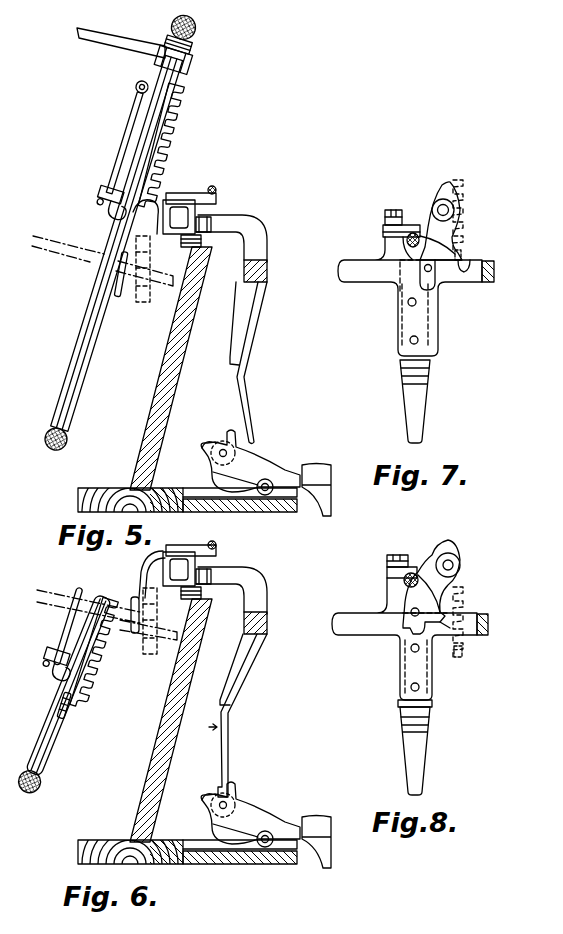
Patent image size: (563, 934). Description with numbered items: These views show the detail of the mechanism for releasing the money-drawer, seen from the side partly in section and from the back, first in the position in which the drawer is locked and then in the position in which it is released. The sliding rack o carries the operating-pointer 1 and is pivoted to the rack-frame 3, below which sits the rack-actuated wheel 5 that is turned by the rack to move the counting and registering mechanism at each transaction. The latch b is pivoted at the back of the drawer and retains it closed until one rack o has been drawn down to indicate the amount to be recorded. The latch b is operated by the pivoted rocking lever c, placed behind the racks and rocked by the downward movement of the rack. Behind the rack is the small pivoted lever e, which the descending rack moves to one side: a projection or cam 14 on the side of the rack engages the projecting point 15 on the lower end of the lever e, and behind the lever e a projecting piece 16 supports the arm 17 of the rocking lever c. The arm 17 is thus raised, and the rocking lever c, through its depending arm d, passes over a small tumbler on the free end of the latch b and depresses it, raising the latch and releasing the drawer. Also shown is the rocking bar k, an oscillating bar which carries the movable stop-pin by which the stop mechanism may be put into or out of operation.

In FIG. 5, the operating-pointer 1 is at (121, 48).
In FIG. 5, the rack-frame 3 is at (120, 233).
In FIG. 6, the rack-frame 3 is at (64, 694).
In FIG. 5, the rack-actuated wheel 5 is at (102, 277).
In FIG. 6, the rack-actuated wheel 5 is at (107, 630).
In FIG. 5, the projection or cam 14 is at (122, 293).
In FIG. 6, the projection or cam 14 is at (72, 716).
In FIG. 7, the projection or cam 14 is at (472, 247).
In FIG. 8, the projection or cam 14 is at (457, 642).
In FIG. 5, the projecting point 15 is at (150, 251).
In FIG. 6, the projecting point 15 is at (137, 598).
In FIG. 7, the projecting point 15 is at (463, 273).
In FIG. 8, the projecting point 15 is at (437, 617).
In FIG. 5, the projecting piece 16 is at (187, 251).
In FIG. 6, the projecting piece 16 is at (193, 599).
In FIG. 7, the projecting piece 16 is at (399, 244).
In FIG. 8, the projecting piece 16 is at (403, 585).
In FIG. 5, the arm of the rocking lever 17 is at (204, 231).
In FIG. 6, the arm of the rocking lever 17 is at (210, 581).
In FIG. 7, the arm of the rocking lever 17 is at (403, 227).
In FIG. 8, the arm of the rocking lever 17 is at (408, 565).
In FIG. 5, the sliding rack o is at (167, 146).
In FIG. 6, the sliding rack o is at (94, 653).
In FIG. 7, the sliding rack o is at (459, 201).
In FIG. 8, the sliding rack o is at (463, 633).
In FIG. 5, the pivoted lever e is at (189, 205).
In FIG. 6, the pivoted lever e is at (189, 556).
In FIG. 7, the pivoted lever e is at (441, 236).
In FIG. 8, the pivoted lever e is at (431, 587).
In FIG. 5, the rocking bar k is at (221, 181).
In FIG. 6, the rocking bar k is at (222, 542).
In FIG. 5, the rocking lever c is at (231, 290).
In FIG. 6, the rocking lever c is at (231, 636).
In FIG. 7, the rocking lever c is at (406, 296).
In FIG. 8, the rocking lever c is at (400, 639).
In FIG. 5, the depending arm d is at (253, 363).
In FIG. 6, the depending arm d is at (238, 715).
In FIG. 7, the depending arm d is at (427, 401).
In FIG. 8, the depending arm d is at (429, 747).
In FIG. 5, the latch b is at (327, 490).
In FIG. 6, the latch b is at (328, 840).